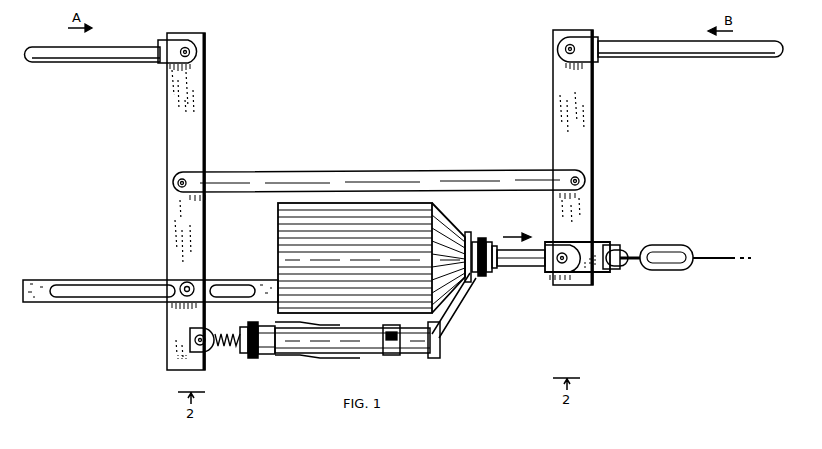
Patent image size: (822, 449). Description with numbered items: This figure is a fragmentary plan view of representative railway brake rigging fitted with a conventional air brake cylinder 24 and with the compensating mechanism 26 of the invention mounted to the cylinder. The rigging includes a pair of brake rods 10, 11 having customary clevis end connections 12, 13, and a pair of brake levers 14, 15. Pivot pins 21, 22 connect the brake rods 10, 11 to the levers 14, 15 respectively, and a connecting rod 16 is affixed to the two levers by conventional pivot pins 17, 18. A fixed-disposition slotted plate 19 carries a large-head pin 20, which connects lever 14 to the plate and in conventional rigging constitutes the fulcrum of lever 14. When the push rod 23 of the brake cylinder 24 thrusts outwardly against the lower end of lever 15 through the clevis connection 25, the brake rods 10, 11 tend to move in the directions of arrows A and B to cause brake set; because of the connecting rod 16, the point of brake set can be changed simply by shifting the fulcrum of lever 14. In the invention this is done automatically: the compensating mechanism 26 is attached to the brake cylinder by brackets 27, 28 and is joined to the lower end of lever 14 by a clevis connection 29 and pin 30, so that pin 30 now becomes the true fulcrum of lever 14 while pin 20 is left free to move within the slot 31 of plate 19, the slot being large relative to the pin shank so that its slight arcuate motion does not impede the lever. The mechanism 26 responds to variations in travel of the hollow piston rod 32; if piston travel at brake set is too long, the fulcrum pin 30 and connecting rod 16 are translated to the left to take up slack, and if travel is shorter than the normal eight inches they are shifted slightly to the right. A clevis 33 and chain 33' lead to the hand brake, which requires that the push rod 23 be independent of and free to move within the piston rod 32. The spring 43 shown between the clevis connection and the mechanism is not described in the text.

The brake rod 10 is at (105, 50).
The brake rod 11 is at (638, 42).
The clevis end connection 12 is at (182, 41).
The clevis end connection 13 is at (585, 42).
The brake lever 14 is at (175, 145).
The brake lever 15 is at (584, 125).
The connecting rod 16 is at (370, 172).
The pivot pin 17 is at (177, 186).
The pivot pin 18 is at (587, 176).
The slotted plate 19 is at (48, 302).
The large-head pin 20 is at (177, 302).
The pivot pin 21 is at (193, 51).
The pivot pin 22 is at (567, 50).
The push rod 23 is at (520, 267).
The brake cylinder 24 is at (413, 235).
The clevis connection 25 is at (555, 271).
The compensating mechanism 26 is at (370, 344).
The bracket 27 is at (300, 327).
The bracket 28 is at (440, 332).
The clevis connection 29 is at (213, 350).
The pin 30 is at (199, 343).
The slot 31 is at (70, 285).
The piston rod 32 is at (488, 248).
The clevis 33 is at (624, 237).
The chain 33' is at (695, 239).
The spring 43 is at (218, 336).